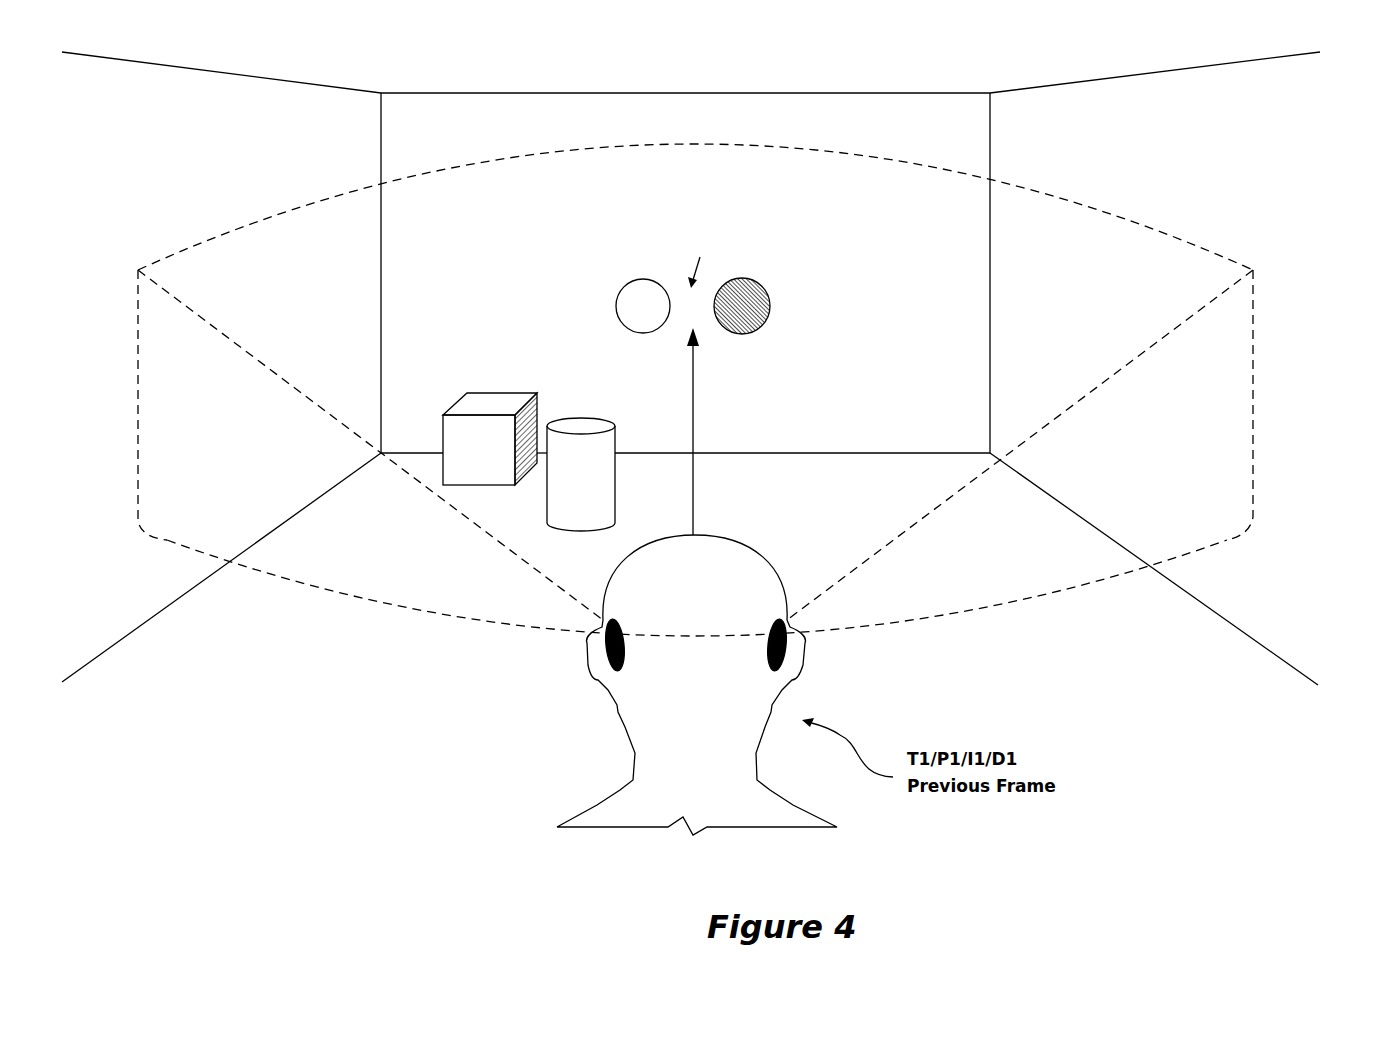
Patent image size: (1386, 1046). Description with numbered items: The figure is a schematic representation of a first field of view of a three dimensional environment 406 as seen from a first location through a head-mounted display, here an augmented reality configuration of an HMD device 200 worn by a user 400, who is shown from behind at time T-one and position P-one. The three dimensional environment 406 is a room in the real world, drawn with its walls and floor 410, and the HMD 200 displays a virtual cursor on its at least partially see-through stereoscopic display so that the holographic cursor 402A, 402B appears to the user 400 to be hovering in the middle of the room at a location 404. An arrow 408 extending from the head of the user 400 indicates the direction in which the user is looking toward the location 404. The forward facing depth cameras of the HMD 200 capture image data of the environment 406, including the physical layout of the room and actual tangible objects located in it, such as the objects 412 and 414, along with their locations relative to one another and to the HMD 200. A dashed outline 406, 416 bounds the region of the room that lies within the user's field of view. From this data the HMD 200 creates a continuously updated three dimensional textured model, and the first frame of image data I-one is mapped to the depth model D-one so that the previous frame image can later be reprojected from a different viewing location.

The HMD device 200 is at (600, 652).
The user 400 is at (697, 685).
The holographic cursor 402A is at (636, 281).
The holographic cursor 402B is at (760, 283).
The location 404 is at (709, 259).
The three dimensional environment 406 is at (1102, 128).
The forward direction / head orientation 408 is at (689, 446).
The virtual room environment 410 is at (691, 368).
The object 412 is at (495, 408).
The object 414 is at (584, 420).
The boundary of field of view 416 is at (1257, 380).